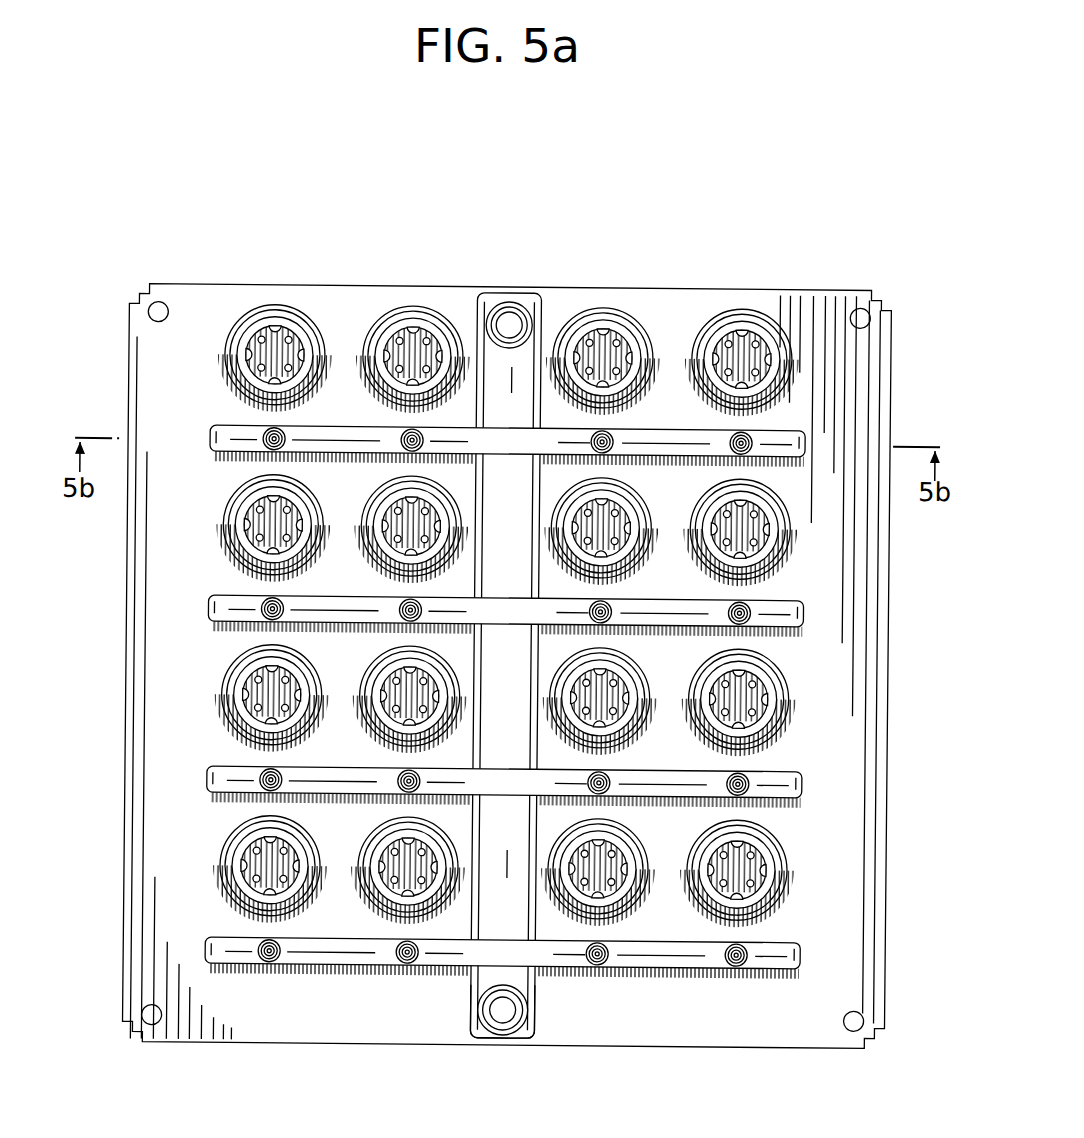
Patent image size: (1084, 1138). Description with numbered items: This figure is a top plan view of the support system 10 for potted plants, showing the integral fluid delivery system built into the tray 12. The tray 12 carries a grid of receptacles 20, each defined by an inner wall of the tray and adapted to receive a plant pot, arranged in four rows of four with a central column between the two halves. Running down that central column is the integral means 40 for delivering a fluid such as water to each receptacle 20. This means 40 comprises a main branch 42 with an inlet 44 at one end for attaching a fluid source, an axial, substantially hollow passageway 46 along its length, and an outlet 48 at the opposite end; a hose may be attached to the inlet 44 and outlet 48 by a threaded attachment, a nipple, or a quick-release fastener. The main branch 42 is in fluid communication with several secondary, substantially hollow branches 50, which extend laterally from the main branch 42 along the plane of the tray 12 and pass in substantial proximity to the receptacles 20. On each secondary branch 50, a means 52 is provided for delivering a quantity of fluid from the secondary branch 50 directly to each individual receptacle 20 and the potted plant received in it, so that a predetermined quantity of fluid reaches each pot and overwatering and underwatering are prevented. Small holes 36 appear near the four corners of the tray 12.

The support system 10 is at (656, 230).
The tray 12 is at (892, 718).
The receptacle 20 is at (275, 314).
The mounting hole 36 is at (862, 307).
The means for delivering a fluid 40 is at (549, 1010).
The main branch 42 is at (503, 930).
The inlet 44 is at (507, 1012).
The passageway 46 is at (518, 698).
The outlet 48 is at (504, 316).
The secondary branch 50 is at (798, 437).
The means for delivering a quantity of fluid 52 is at (755, 440).